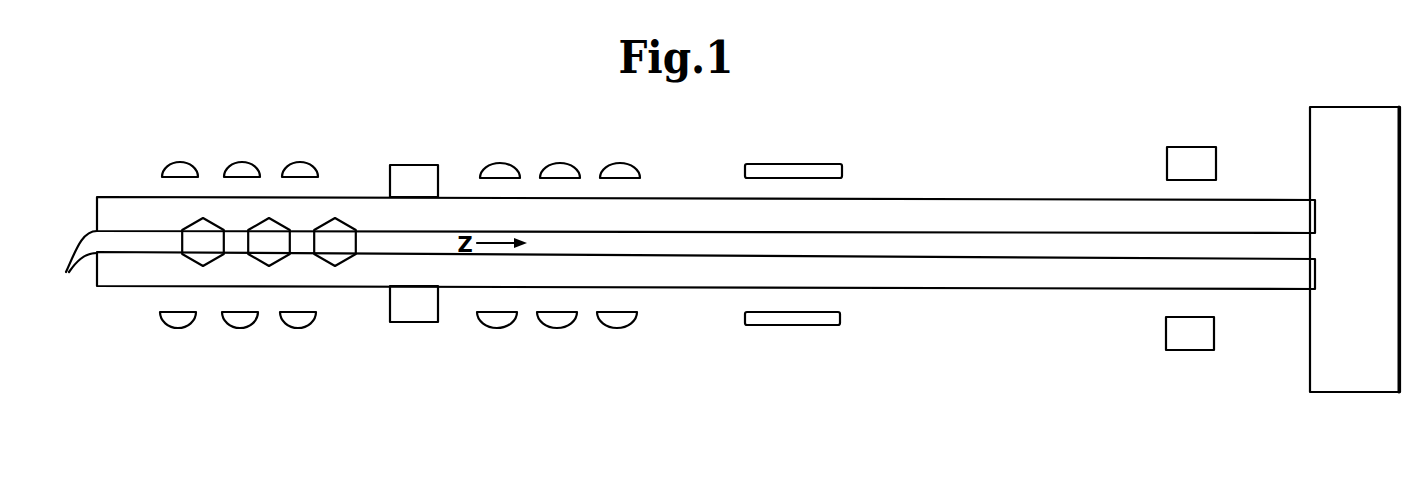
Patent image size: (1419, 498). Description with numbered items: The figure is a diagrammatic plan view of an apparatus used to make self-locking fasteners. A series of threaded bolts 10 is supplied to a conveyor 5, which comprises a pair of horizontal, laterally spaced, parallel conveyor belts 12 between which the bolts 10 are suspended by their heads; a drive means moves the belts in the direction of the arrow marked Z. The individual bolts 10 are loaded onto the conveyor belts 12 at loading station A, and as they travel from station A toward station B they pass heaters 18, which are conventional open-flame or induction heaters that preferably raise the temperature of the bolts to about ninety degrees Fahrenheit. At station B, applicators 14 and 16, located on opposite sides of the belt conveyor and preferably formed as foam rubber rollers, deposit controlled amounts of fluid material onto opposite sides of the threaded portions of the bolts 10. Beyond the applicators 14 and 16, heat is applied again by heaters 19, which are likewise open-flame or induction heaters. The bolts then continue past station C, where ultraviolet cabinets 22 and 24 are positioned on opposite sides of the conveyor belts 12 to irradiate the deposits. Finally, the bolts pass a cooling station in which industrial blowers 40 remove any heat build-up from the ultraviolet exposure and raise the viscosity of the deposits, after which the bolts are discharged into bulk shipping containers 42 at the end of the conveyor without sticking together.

The conveyor 5 is at (991, 193).
The bolts 10 is at (187, 258).
The conveyor belts 12 is at (71, 268).
The applicator 14 is at (392, 165).
The applicator 16 is at (412, 322).
The heaters 18 is at (287, 176).
The heaters 19 is at (600, 167).
The ultraviolet cabinet 22 is at (820, 164).
The ultraviolet cabinet 24 is at (798, 325).
The industrial blowers 40 is at (1182, 147).
The bulk shipping containers 42 is at (1350, 105).
The loading station A is at (103, 178).
The station B is at (418, 145).
The station C is at (778, 152).